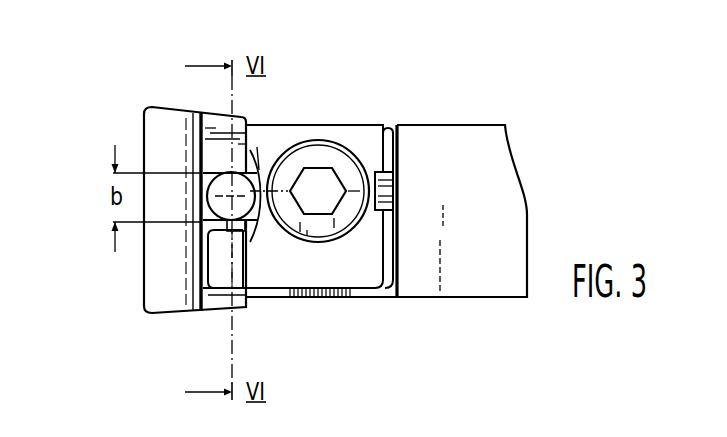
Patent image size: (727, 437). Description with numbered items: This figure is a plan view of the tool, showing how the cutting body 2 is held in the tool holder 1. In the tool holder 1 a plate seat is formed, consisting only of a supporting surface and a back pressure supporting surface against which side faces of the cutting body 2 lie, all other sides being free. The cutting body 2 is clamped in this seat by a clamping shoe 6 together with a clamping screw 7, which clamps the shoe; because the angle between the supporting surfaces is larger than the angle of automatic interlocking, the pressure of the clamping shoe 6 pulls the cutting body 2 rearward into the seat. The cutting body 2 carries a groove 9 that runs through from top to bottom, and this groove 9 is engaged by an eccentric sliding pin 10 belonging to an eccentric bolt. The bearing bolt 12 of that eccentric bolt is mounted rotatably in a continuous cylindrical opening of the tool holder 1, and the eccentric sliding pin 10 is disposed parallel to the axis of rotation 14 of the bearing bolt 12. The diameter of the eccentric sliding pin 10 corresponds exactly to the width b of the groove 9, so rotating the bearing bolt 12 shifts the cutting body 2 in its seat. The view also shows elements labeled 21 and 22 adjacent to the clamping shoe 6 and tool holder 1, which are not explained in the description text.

The tool holder 1 is at (436, 147).
The cutting body 2 is at (155, 277).
The clamping shoe 6 is at (375, 270).
The clamping screw 7 is at (337, 157).
The groove 9 is at (193, 222).
The eccentric sliding pin 10 is at (210, 172).
The bearing bolt 12 is at (257, 150).
The axis of rotation 14 is at (247, 226).
The plate 21 is at (379, 172).
The block 22 is at (395, 188).